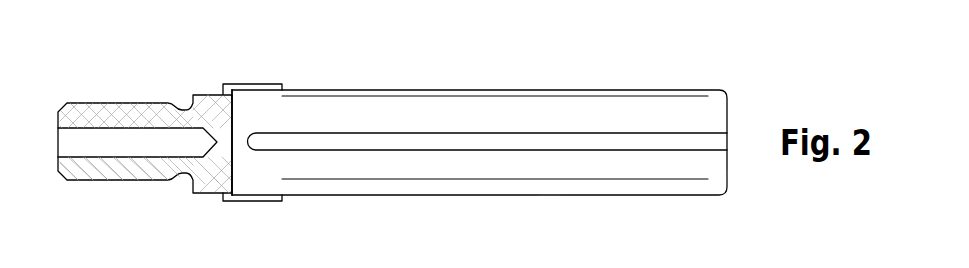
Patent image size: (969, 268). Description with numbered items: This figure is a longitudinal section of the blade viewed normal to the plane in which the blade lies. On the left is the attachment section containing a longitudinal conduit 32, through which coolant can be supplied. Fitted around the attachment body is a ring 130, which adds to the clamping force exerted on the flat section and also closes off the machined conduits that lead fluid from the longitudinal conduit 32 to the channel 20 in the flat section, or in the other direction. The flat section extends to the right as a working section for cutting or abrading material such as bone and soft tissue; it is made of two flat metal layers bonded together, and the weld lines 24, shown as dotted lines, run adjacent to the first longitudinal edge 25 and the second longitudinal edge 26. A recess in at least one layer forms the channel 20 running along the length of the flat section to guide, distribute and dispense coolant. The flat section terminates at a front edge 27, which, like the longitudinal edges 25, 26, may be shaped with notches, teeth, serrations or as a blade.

The channel 20 is at (403, 138).
The weld lines 24 is at (478, 98).
The first longitudinal edge 25 is at (540, 194).
The second longitudinal edge 26 is at (555, 88).
The front edge 27 is at (733, 176).
The longitudinal conduit 32 is at (122, 150).
The ring 130 is at (262, 83).